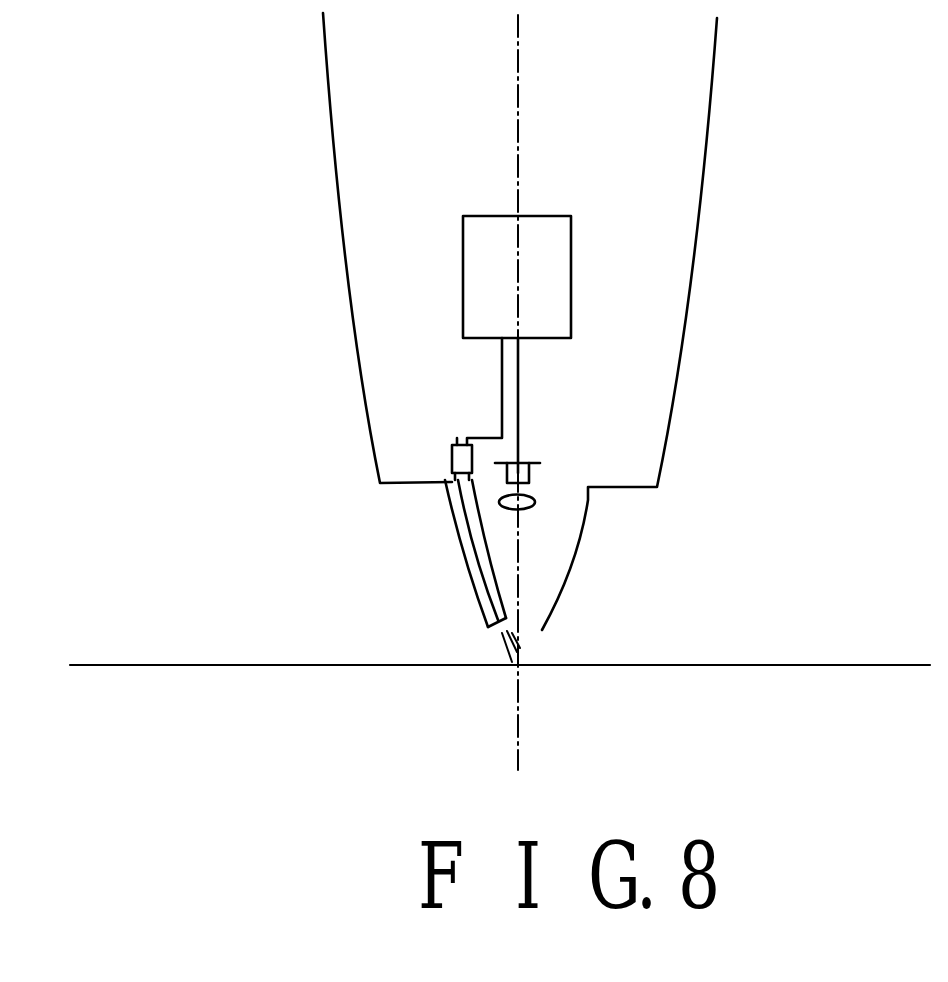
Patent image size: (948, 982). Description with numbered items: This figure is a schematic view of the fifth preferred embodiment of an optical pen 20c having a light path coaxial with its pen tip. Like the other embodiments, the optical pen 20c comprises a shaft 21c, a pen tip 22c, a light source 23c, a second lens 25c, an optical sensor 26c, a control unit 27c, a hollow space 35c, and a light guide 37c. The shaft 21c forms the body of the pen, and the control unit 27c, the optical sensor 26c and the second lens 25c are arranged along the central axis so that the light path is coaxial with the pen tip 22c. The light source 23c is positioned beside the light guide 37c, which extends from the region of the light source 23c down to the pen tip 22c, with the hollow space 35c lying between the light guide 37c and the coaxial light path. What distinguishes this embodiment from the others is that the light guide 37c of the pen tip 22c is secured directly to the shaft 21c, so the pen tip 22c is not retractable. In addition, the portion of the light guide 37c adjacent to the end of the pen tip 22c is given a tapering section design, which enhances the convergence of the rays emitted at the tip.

The optical pen 20c is at (224, 186).
The shaft 21c is at (857, 242).
The pen tip 22c is at (492, 622).
The light source 23c is at (452, 457).
The second lens 25c is at (735, 494).
The optical sensor 26c is at (785, 448).
The control unit 27c is at (755, 170).
The hollow space 35c is at (498, 555).
The light guide 37c is at (459, 528).